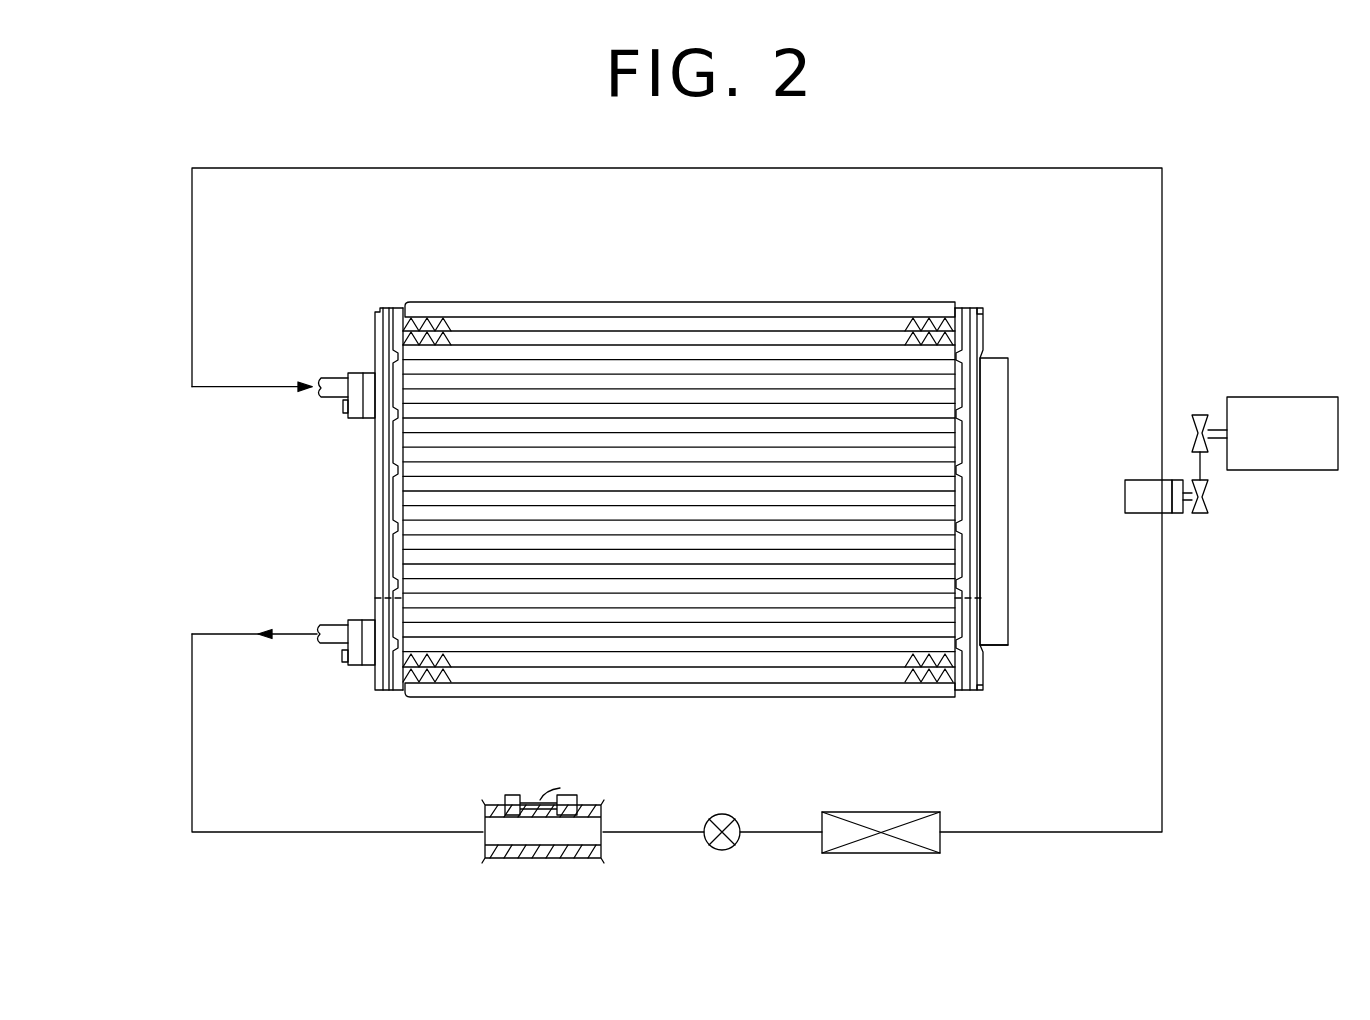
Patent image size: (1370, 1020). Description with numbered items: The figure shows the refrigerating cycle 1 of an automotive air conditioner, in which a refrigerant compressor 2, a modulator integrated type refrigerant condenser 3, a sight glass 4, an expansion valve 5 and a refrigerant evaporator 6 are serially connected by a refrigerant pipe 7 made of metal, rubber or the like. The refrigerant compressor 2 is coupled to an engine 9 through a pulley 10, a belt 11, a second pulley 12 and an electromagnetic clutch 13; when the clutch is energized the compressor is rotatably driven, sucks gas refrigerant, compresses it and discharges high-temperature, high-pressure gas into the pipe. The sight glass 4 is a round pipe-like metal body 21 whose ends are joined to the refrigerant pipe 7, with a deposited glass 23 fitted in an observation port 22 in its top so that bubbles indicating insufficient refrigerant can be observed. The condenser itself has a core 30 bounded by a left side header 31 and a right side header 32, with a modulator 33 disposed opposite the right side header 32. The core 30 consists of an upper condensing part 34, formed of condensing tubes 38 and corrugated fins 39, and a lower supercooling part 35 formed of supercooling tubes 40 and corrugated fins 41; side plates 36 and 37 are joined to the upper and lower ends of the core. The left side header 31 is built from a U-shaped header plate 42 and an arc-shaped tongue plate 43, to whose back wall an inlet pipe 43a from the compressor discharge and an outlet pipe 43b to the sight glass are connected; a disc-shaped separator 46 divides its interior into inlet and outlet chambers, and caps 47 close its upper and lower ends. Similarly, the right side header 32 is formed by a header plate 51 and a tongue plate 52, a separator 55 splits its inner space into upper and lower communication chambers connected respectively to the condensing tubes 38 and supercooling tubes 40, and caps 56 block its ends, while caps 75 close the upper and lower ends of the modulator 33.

The refrigerating cycle 1 is at (232, 142).
The refrigerant compressor 2 is at (1137, 490).
The modulator integrated type refrigerant condenser 3 is at (397, 298).
The sight glass 4 is at (490, 800).
The expansion valve 5 is at (727, 815).
The refrigerant evaporator 6 is at (882, 818).
The refrigerant pipe 7 is at (1163, 632).
The engine 9 is at (1295, 410).
The pulley 10 is at (1198, 414).
The belt 11 is at (1203, 468).
The pulley 12 is at (1207, 503).
The electromagnetic clutch 13 is at (1180, 513).
The metal body 21 is at (545, 858).
The observation port 22 is at (535, 795).
The deposited glass 23 is at (560, 788).
The core 30 is at (845, 305).
The left side header 31 is at (373, 322).
The right side header 32 is at (990, 318).
The modulator 33 is at (1015, 385).
The condensing part 34 is at (655, 345).
The supercooling part 35 is at (675, 652).
The side plate 36 is at (718, 312).
The side plate 37 is at (818, 690).
The condensing tubes 38 is at (568, 332).
The corrugated fins 39 is at (450, 330).
The supercooling tubes 40 is at (590, 667).
The corrugated fins 41 is at (455, 668).
The header plate 42 is at (395, 482).
The tongue plate 43 is at (375, 460).
The inlet pipe 43a is at (330, 378).
The outlet pipe 43b is at (330, 652).
The separator 46 is at (377, 598).
The caps 47 is at (386, 692).
The header plate 51 is at (962, 505).
The tongue plate 52 is at (975, 440).
The separator 55 is at (982, 598).
The caps 56 is at (958, 692).
The caps 75 is at (993, 648).